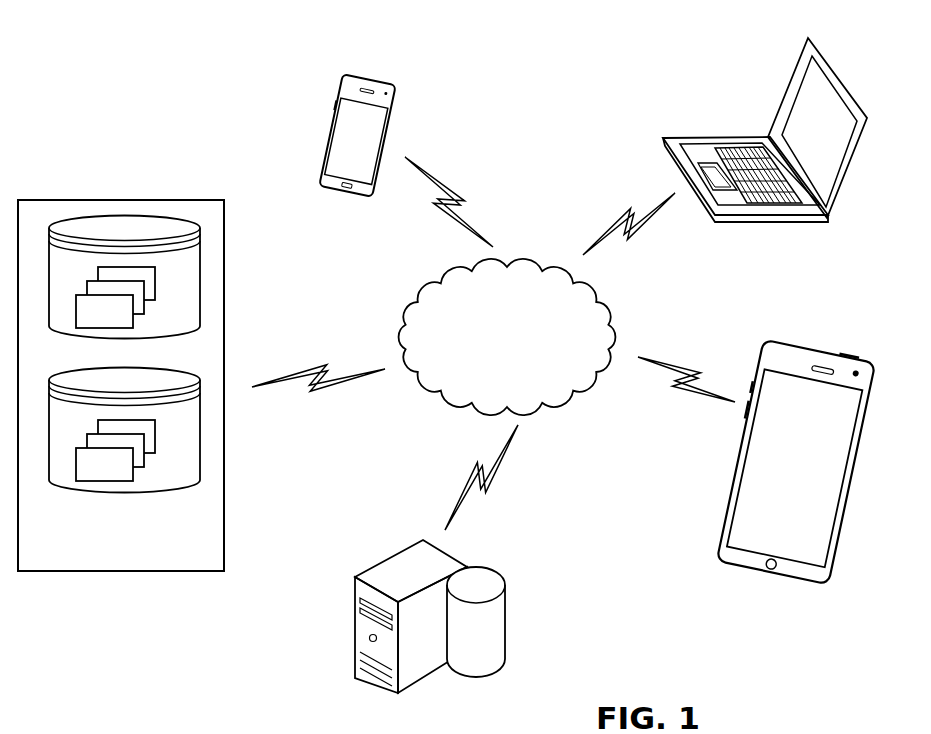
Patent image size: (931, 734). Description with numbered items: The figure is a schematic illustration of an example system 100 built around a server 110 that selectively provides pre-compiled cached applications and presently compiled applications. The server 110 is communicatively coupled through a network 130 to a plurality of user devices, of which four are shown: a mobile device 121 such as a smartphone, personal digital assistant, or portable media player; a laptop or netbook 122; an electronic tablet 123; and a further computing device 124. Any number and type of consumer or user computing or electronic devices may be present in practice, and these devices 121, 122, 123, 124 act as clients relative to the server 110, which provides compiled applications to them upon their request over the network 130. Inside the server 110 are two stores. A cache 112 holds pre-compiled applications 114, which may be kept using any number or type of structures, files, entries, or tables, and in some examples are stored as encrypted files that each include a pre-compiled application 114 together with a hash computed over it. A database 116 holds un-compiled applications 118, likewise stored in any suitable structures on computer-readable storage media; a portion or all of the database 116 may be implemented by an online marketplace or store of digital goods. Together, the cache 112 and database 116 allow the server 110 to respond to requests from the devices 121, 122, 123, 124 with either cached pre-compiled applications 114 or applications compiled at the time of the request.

The system 100 is at (172, 96).
The server 110 is at (100, 561).
The cache 112 is at (105, 394).
The pre-compiled applications 114 is at (87, 475).
The database 116 is at (105, 242).
The un-compiled applications 118 is at (87, 322).
The mobile device 121 is at (330, 126).
The laptop or netbook 122 is at (713, 136).
The electronic tablet 123 is at (802, 343).
The device 124 is at (392, 560).
The network 130 is at (487, 362).